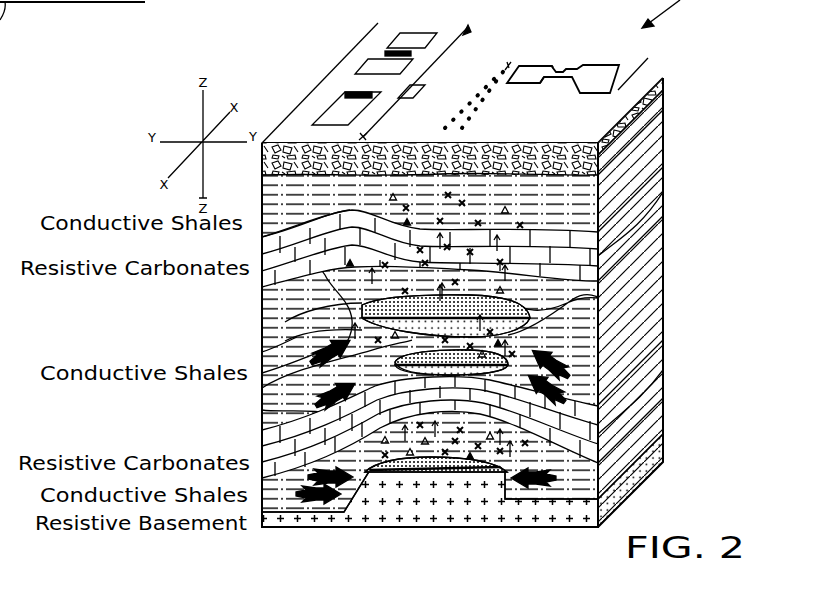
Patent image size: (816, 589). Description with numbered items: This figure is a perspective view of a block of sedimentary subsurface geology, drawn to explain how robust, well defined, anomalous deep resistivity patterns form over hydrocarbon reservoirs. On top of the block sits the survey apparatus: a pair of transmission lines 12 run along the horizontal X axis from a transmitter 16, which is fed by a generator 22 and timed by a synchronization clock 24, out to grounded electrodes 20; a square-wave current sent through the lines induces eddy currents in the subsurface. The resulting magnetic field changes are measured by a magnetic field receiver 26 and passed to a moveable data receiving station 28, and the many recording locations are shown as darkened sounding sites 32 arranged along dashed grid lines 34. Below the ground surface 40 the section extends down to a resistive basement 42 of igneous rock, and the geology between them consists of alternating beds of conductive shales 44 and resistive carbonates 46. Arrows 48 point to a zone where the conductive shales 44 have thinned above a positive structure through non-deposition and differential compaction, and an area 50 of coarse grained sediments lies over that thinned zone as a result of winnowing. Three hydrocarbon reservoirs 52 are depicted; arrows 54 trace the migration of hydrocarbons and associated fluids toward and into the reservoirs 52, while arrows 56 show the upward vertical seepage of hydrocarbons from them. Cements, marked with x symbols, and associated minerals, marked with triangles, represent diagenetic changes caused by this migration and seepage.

The transmission lines 12 is at (382, 98).
The transmitter 16 is at (372, 62).
The grounded electrodes 20 is at (364, 134).
The generator 22 is at (342, 110).
The synchronization clock 24 is at (400, 38).
The magnetic field receiver 26 is at (537, 72).
The moveable data receiving station 28 is at (636, 58).
The sounding sites 32 is at (495, 77).
The dashed lines 34 is at (508, 64).
The ground surface 40 is at (645, 82).
The resistive basement 42 is at (648, 487).
The conductive shales 44 is at (653, 152).
The resistive carbonates 46 is at (667, 184).
The arrows 48 is at (645, 302).
The area of coarse grained sediments 50 is at (647, 287).
The hydrocarbon reservoirs 52 is at (280, 312).
The arrows 54 is at (262, 410).
The arrows 56 is at (263, 255).